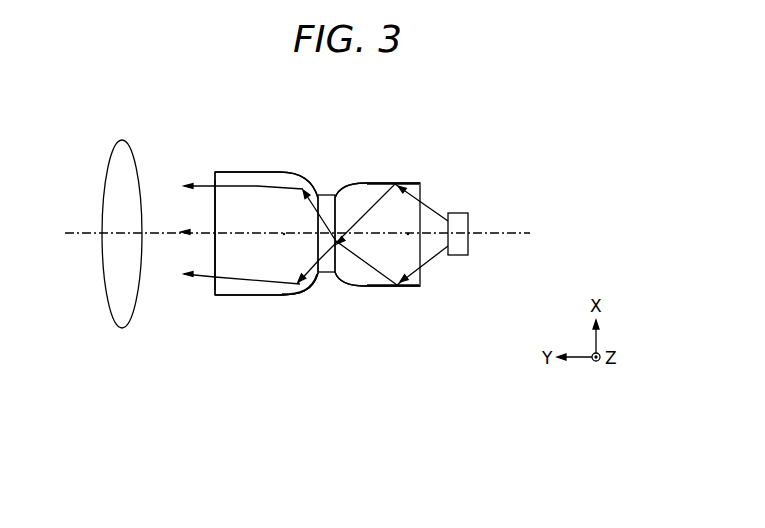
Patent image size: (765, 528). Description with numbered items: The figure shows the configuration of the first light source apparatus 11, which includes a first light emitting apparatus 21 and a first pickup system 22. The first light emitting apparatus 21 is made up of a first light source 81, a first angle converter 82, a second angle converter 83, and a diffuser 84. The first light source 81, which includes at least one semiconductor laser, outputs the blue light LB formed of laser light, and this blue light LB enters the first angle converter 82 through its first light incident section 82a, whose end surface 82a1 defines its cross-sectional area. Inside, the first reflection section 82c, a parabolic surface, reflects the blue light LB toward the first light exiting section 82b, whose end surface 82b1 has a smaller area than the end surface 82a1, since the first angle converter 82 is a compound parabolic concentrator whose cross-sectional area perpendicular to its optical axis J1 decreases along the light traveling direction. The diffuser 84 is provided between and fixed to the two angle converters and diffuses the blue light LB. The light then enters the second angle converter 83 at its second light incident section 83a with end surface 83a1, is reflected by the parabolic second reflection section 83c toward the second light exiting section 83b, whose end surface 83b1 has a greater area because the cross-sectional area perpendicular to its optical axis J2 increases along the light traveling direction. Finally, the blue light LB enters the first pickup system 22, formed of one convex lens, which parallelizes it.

The first light source apparatus 11 is at (547, 147).
The first light emitting apparatus 21 is at (492, 433).
The first pickup system 22 is at (108, 163).
The first light source 81 is at (468, 213).
The first angle converter 82 is at (377, 192).
The first light incident section 82a is at (420, 189).
The end surface of the first light incident section 82a1 is at (400, 184).
The first light exiting section 82b is at (340, 286).
The end surface of the first light exiting section 82b1 is at (368, 338).
The first reflection section 82c is at (358, 186).
The second angle converter 83 is at (250, 178).
The second light incident section 83a is at (319, 280).
The end surface of the second light incident section 83a1 is at (293, 350).
The second light exiting section 83b is at (215, 288).
The end surface of the second light exiting section 83b1 is at (204, 294).
The second reflection section 83c is at (227, 172).
The diffuser 84 is at (325, 195).
The optical axis of the first angle converter J1 is at (408, 237).
The optical axis of the second angle converter J2 is at (284, 237).
The blue light LB is at (205, 277).